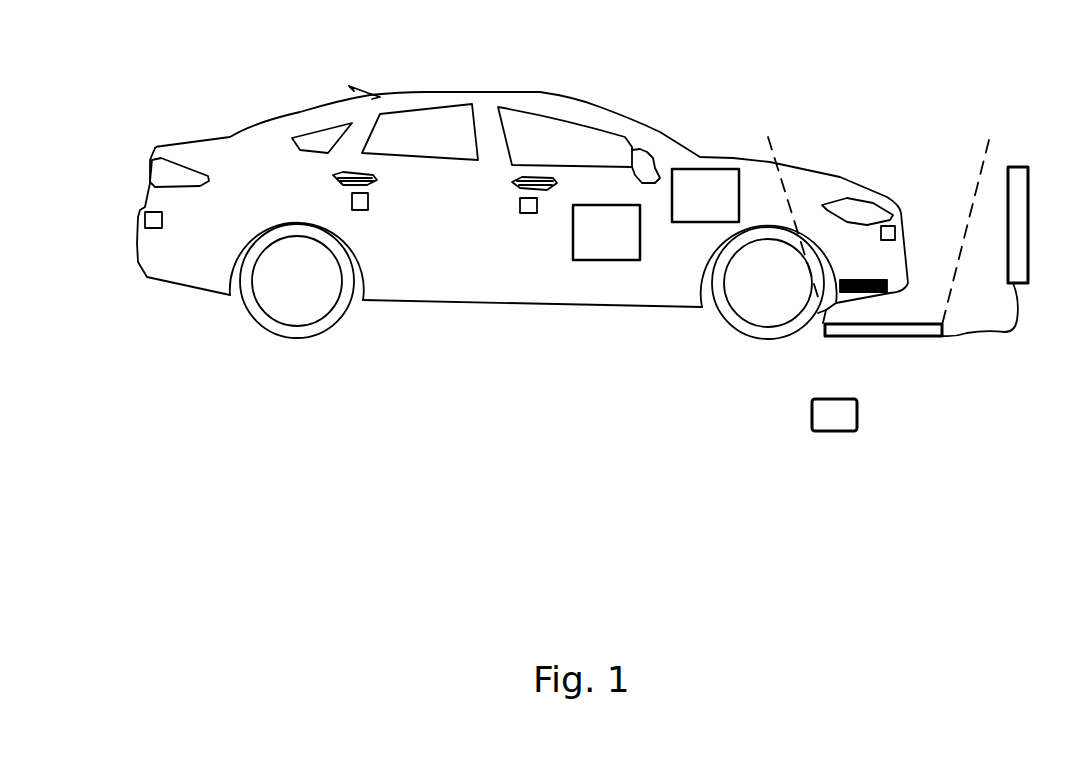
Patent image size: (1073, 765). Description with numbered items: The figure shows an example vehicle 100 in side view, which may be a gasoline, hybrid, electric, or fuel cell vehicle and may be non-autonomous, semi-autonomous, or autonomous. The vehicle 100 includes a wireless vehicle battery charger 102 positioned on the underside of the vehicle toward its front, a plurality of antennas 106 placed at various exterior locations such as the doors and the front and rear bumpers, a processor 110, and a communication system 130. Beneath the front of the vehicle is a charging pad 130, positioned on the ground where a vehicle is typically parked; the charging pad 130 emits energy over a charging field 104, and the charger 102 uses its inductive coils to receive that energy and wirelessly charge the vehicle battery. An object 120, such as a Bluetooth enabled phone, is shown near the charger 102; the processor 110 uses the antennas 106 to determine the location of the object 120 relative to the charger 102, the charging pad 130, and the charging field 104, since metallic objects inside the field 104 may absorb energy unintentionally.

The vehicle 100 is at (500, 92).
The wireless vehicle battery charger 102 is at (826, 310).
The charging field 104 is at (988, 140).
The antennas 106 is at (143, 212).
The processor 110 is at (705, 195).
The object 120 is at (820, 432).
The charging pad 130 is at (967, 397).